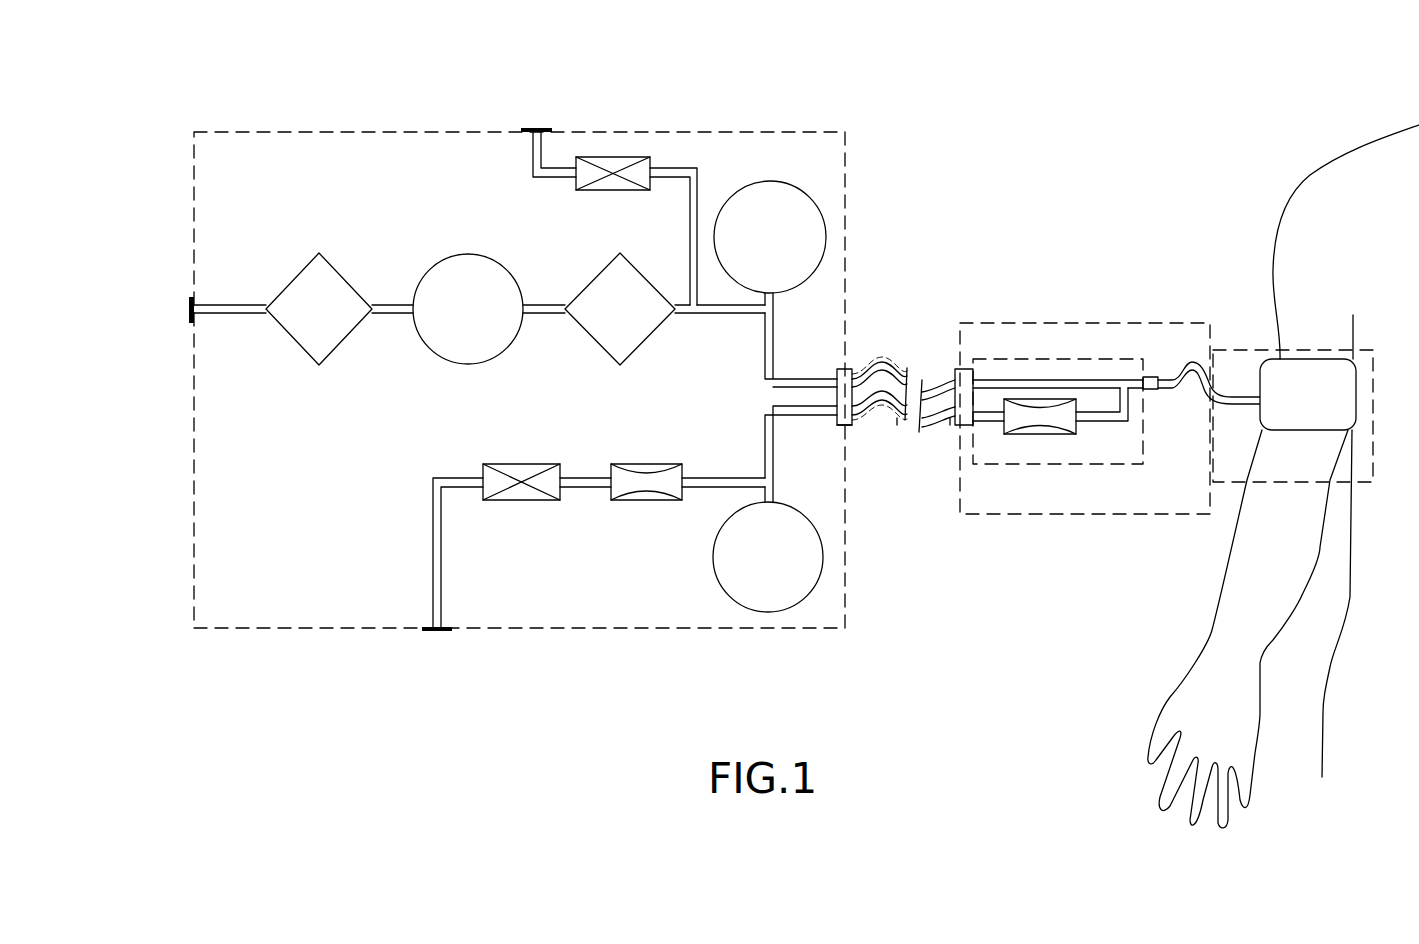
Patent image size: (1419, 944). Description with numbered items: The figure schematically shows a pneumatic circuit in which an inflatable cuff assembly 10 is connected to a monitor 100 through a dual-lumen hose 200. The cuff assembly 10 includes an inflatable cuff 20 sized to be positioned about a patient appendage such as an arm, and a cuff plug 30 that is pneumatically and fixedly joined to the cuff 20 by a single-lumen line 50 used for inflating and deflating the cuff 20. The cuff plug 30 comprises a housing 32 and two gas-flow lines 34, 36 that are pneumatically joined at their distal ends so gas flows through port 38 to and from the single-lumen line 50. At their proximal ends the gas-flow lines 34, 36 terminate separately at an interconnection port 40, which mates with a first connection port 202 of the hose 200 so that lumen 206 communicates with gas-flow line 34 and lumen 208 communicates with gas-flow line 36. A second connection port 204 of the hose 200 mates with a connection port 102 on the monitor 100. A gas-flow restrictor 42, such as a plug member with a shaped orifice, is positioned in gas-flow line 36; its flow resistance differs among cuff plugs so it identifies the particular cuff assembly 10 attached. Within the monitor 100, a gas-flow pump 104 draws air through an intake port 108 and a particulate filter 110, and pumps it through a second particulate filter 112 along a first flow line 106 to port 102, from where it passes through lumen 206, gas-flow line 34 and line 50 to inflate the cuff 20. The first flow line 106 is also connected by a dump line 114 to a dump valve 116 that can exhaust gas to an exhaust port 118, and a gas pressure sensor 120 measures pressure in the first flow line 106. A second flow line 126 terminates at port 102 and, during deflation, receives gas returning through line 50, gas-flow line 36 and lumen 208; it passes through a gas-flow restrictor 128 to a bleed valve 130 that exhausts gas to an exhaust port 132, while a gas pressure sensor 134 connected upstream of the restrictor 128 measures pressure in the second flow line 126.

The cuff assembly 10 is at (981, 300).
The inflatable cuff 20 is at (1262, 424).
The cuff plug 30 is at (1026, 494).
The housing 32 is at (1040, 357).
The gas-flow line 34 is at (1090, 380).
The gas-flow line 36 is at (1108, 421).
The port 38 is at (1152, 377).
The interconnection port 40 is at (964, 368).
The gas-flow restrictor 42 is at (1040, 434).
The single-lumen line 50 is at (1188, 370).
The monitor 100 is at (860, 108).
The connection port 102 is at (840, 369).
The gas-flow pump 104 is at (430, 275).
The first flow line 106 is at (775, 325).
The intake port 108 is at (190, 297).
The particulate filter 110 is at (300, 276).
The second particulate filter 112 is at (582, 292).
The dump line 114 is at (700, 184).
The dump valve 116 is at (626, 157).
The exhaust port 118 is at (546, 130).
The gas pressure sensor 120 is at (818, 206).
The second flow line 126 is at (774, 478).
The gas-flow restrictor 128 is at (640, 500).
The bleed valve 130 is at (533, 500).
The exhaust port 132 is at (452, 632).
The gas pressure sensor 134 is at (812, 590).
The dual-lumen hose 200 is at (905, 338).
The first connection port 202 is at (950, 425).
The second connection port 204 is at (853, 425).
The lumen 206 is at (948, 369).
The lumen 208 is at (898, 425).